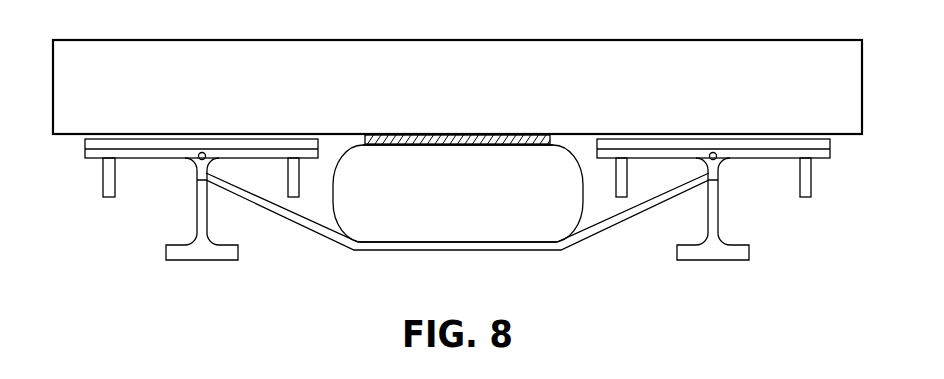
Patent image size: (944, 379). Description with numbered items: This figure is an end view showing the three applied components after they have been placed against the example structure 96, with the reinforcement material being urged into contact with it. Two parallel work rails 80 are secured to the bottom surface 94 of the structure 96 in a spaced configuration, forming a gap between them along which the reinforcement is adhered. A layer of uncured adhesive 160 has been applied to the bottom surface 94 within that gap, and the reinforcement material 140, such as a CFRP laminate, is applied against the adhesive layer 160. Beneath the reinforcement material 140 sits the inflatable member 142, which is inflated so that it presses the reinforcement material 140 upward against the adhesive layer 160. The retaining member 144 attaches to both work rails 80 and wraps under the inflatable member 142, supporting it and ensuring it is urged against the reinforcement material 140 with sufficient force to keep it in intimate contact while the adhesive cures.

The work rail 80 is at (101, 246).
The bottom surface 94 is at (837, 137).
The structure 96 is at (798, 47).
The reinforcement material 140 is at (520, 146).
The inflatable member 142 is at (475, 206).
The retaining member 144 is at (397, 245).
The adhesive layer 160 is at (462, 135).